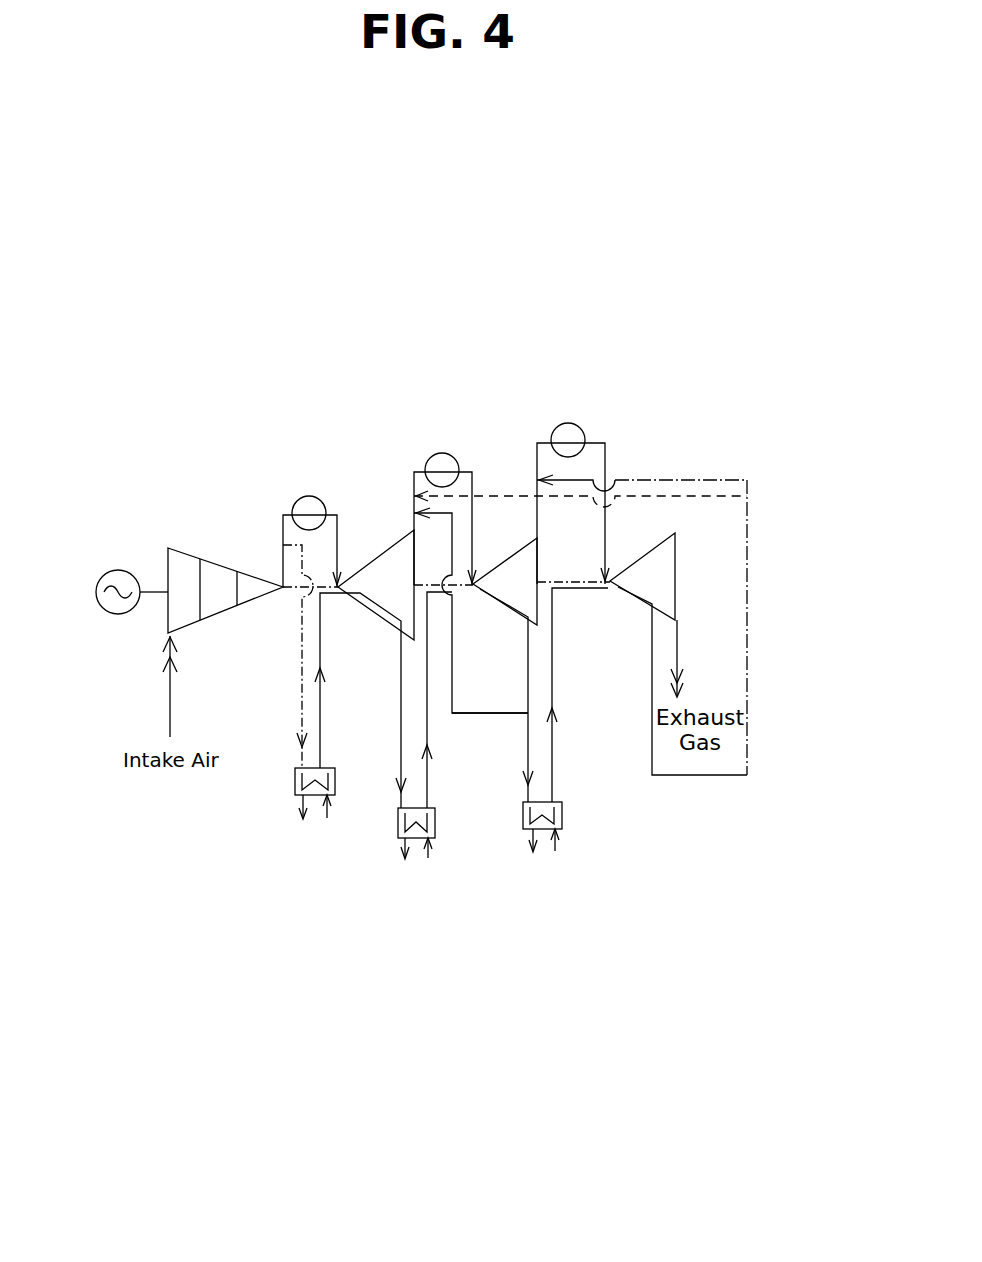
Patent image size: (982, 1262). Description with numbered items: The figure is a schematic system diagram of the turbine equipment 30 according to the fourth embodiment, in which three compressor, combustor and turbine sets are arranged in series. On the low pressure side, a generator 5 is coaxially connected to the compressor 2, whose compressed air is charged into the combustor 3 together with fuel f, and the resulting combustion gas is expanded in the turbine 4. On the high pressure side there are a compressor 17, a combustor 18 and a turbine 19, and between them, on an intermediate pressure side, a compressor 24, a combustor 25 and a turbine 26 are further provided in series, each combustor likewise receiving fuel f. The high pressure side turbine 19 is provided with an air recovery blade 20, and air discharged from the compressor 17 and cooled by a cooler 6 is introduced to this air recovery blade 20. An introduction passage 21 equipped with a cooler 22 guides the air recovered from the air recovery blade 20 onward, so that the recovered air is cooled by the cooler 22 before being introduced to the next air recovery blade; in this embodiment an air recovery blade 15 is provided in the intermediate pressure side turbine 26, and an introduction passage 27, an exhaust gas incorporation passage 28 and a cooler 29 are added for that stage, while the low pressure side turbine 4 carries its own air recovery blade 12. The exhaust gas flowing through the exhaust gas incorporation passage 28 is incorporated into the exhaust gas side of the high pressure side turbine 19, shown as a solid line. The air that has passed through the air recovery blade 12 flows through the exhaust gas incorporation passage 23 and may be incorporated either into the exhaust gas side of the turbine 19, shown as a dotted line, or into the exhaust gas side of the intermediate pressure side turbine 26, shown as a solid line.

The compressor 2 is at (182, 565).
The combustor 3 is at (318, 500).
The turbine 4 is at (663, 570).
The generator 5 is at (96, 612).
The cooler 6 is at (295, 782).
The air recovery blade 12 is at (630, 600).
The air recovery blade 15 is at (512, 598).
The compressor 17 is at (247, 592).
The combustor 18 is at (572, 436).
The turbine 19 is at (393, 570).
The air recovery blade 20 is at (382, 616).
The introduction passage 21 is at (458, 735).
The cooler 22 is at (398, 822).
The exhaust gas incorporation passage 23 is at (748, 683).
The compressor 24 is at (214, 572).
The combustor 25 is at (441, 468).
The turbine 26 is at (510, 570).
The introduction passage 27 is at (555, 783).
The exhaust gas incorporation passage 28 is at (466, 718).
The cooler 29 is at (530, 768).
The turbine equipment 30 is at (655, 402).
The fuel f is at (290, 497).